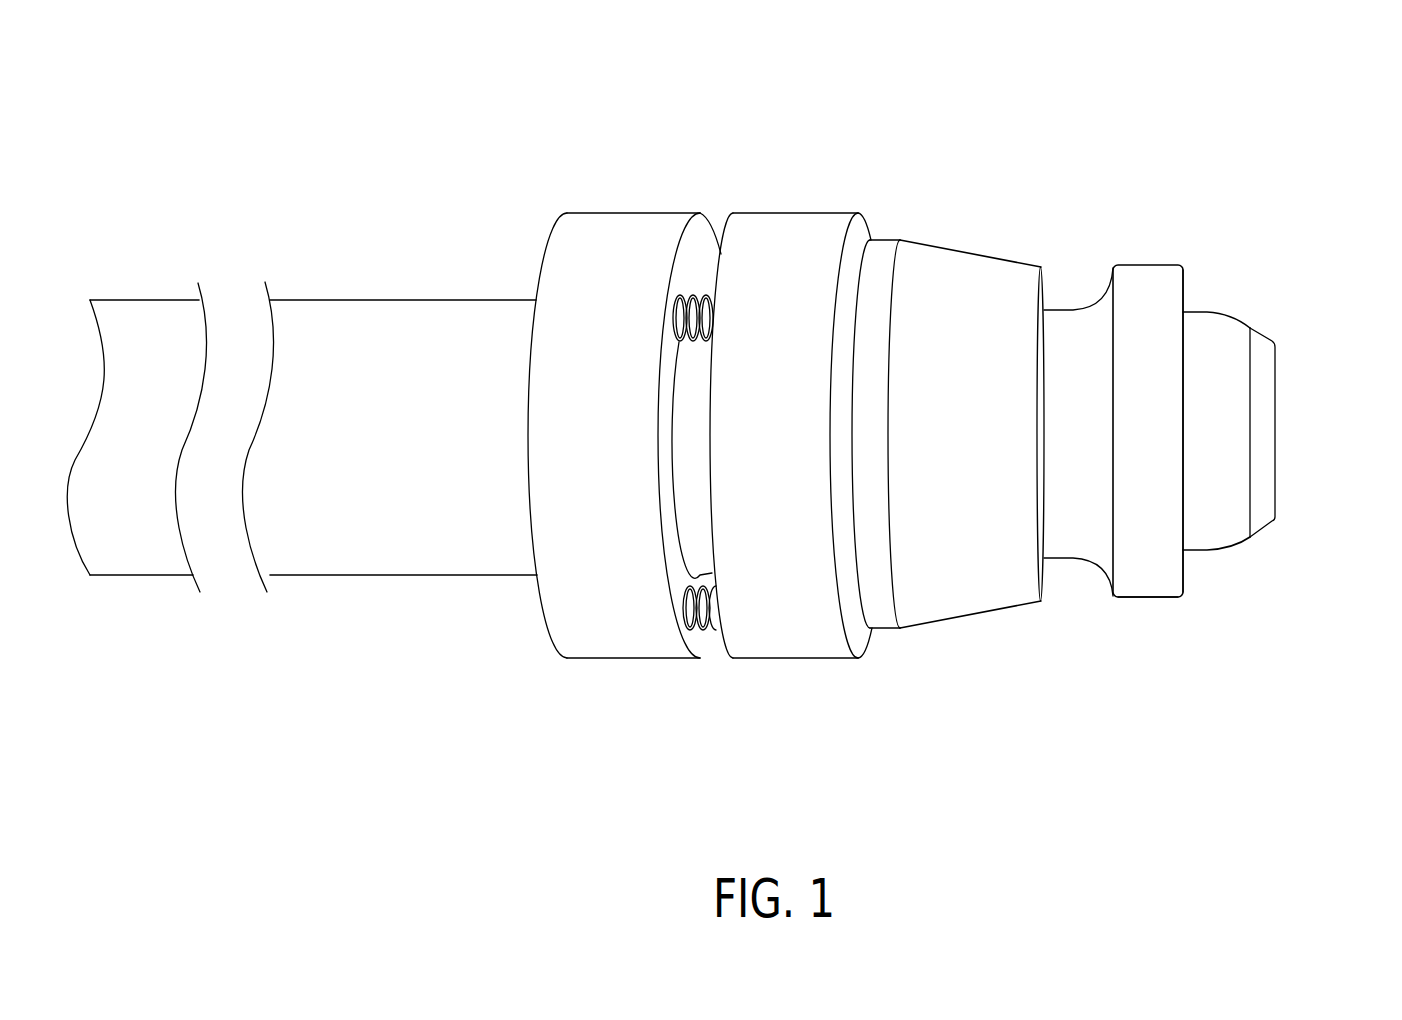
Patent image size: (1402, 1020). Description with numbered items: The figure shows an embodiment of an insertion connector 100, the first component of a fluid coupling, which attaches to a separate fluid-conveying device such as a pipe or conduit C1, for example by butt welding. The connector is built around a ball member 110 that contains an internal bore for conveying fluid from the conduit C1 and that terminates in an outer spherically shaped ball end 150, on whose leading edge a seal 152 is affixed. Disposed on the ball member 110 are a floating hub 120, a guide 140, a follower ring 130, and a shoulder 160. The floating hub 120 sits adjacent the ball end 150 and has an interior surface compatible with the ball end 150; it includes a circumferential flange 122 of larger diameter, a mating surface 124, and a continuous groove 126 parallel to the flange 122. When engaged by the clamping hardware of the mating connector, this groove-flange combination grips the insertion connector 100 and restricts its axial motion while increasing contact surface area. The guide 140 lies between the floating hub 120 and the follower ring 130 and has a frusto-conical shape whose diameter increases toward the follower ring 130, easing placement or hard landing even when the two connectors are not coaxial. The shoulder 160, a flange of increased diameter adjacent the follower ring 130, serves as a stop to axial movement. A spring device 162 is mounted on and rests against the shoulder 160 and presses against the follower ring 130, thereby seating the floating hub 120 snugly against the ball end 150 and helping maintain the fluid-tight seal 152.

The insertion connector 100 is at (362, 92).
The conduit C1 is at (160, 318).
The ball member 110 is at (342, 305).
The floating hub 120 is at (1138, 275).
The flange 122 is at (1152, 597).
The mating surface 124 is at (1185, 572).
The groove 126 is at (1098, 568).
The follower ring 130 is at (987, 270).
The guide 140 is at (812, 220).
The ball end 150 is at (1220, 323).
The seal 152 is at (1277, 520).
The shoulder 160 is at (635, 220).
The spring device 162 is at (712, 657).